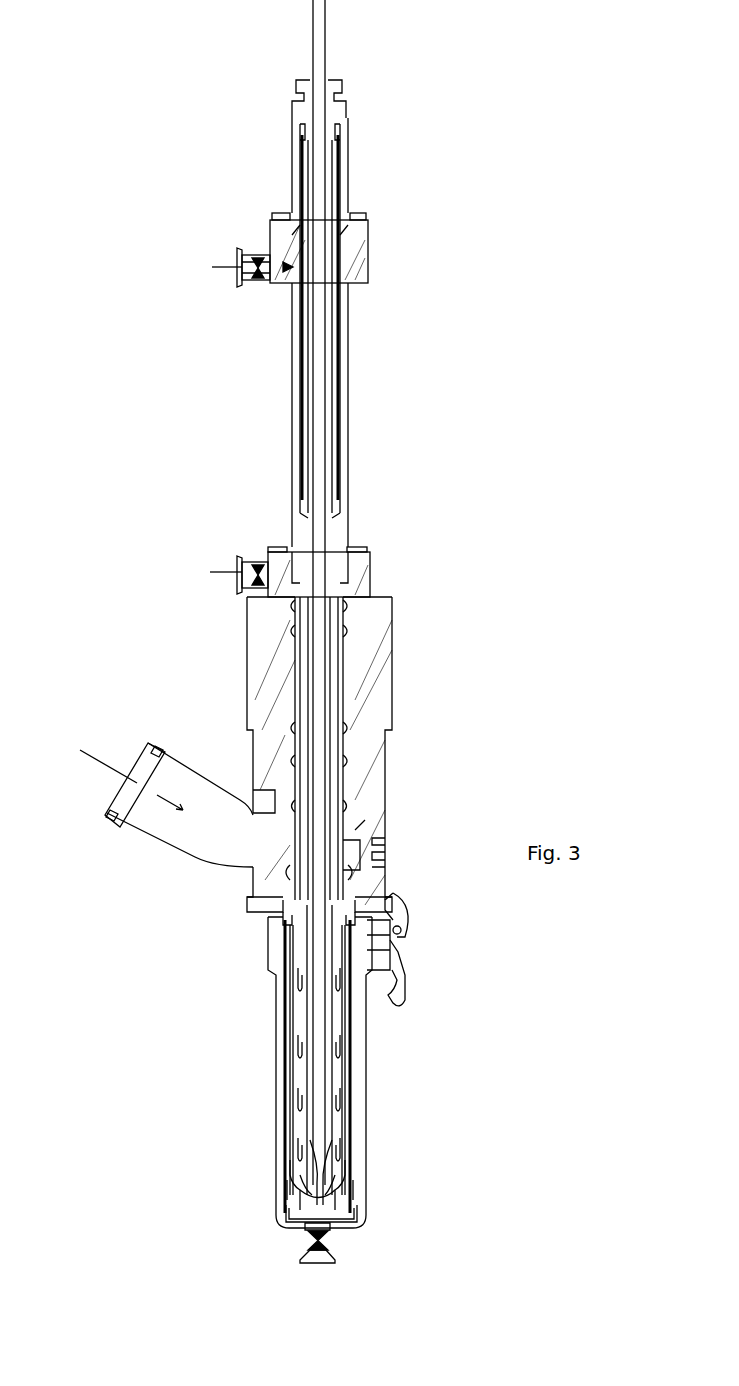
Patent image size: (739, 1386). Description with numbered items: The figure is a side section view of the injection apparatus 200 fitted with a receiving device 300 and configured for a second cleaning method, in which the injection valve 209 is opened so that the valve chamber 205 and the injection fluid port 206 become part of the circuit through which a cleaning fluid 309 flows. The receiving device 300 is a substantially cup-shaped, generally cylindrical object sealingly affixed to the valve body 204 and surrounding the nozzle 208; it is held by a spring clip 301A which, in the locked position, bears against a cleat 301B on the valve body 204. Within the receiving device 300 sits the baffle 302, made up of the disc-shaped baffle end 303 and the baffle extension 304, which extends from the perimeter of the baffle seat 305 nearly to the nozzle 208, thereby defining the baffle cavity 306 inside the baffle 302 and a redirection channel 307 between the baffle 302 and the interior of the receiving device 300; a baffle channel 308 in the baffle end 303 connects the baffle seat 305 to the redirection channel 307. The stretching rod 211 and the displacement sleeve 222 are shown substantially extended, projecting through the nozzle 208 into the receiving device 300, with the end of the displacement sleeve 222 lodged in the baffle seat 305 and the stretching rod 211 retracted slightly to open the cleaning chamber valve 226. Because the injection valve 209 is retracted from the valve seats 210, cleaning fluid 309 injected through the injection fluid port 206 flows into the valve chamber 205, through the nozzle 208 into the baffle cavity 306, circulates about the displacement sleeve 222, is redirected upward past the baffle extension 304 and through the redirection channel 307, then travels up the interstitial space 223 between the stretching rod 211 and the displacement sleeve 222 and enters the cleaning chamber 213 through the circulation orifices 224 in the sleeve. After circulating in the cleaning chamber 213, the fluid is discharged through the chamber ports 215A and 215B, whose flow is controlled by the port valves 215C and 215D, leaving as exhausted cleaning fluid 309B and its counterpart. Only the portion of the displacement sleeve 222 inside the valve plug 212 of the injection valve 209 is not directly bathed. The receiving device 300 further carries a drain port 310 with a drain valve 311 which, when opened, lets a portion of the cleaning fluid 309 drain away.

The injection apparatus 200 is at (418, 392).
The stretching rod 211 is at (326, 26).
The cleaning chamber 213 is at (293, 350).
The chamber port 215A is at (238, 283).
The chamber port 215B is at (240, 582).
The port valve 215C is at (258, 262).
The port valve 215D is at (258, 564).
The exhausted cleaning fluid 309B is at (212, 268).
The valve body 204 is at (386, 776).
The valve chamber 205 is at (268, 790).
The injection fluid port 206 is at (120, 790).
The cleaning fluid 309 is at (103, 762).
The interstitial space 223 is at (300, 640).
The circulation orifices 224 is at (346, 582).
The injection valve 209 is at (362, 850).
The valve plug 212 is at (388, 856).
The valve seats 210 is at (376, 900).
The nozzle 208 is at (392, 945).
The spring clip 301A is at (406, 990).
The cleat 301B is at (402, 912).
The baffle cavity 306 is at (276, 988).
The redirection channel 307 is at (283, 1060).
The baffle extension 304 is at (352, 1060).
The displacement sleeve 222 is at (352, 1090).
The cleaning chamber valve 226 is at (333, 1150).
The baffle end 303 is at (290, 1170).
The baffle channel 308 is at (308, 1192).
The baffle seat 305 is at (340, 1168).
The baffle 302 is at (342, 1180).
The receiving device 300 is at (366, 1218).
The drain valve 311 is at (330, 1242).
The drain port 310 is at (300, 1258).